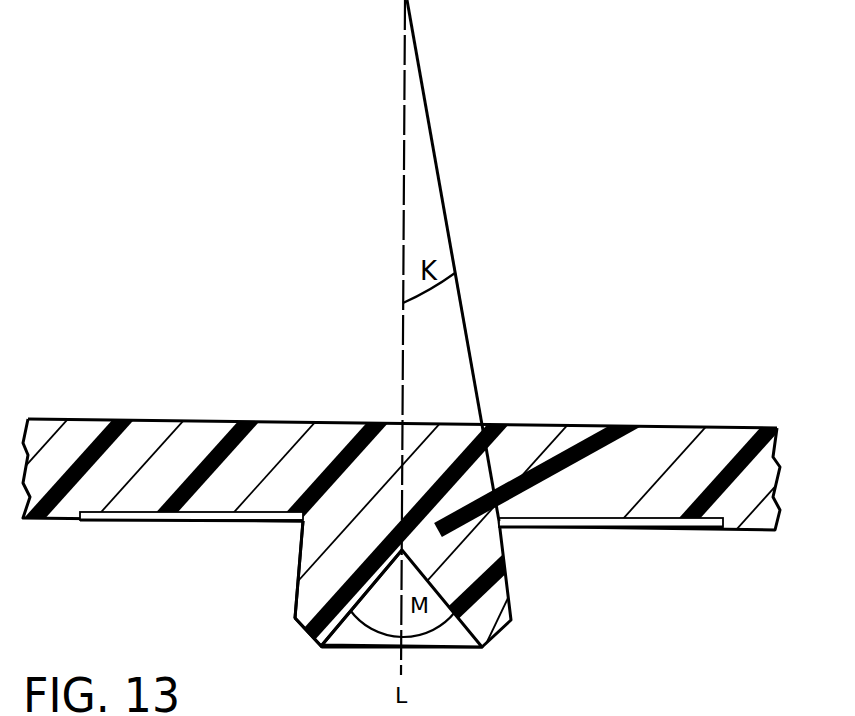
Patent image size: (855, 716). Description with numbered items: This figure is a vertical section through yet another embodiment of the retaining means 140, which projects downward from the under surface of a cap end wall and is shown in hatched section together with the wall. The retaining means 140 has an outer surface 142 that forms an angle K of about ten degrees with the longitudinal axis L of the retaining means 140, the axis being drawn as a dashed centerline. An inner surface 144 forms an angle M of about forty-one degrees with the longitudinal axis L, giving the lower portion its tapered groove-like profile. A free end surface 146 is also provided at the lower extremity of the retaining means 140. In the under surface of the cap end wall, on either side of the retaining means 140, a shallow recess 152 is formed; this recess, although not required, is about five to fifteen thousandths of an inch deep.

The retaining means 140 is at (250, 616).
The outer surface 142 is at (297, 567).
The inner surface 144 is at (350, 610).
The free end surface 146 is at (302, 635).
The recess 152 is at (97, 514).